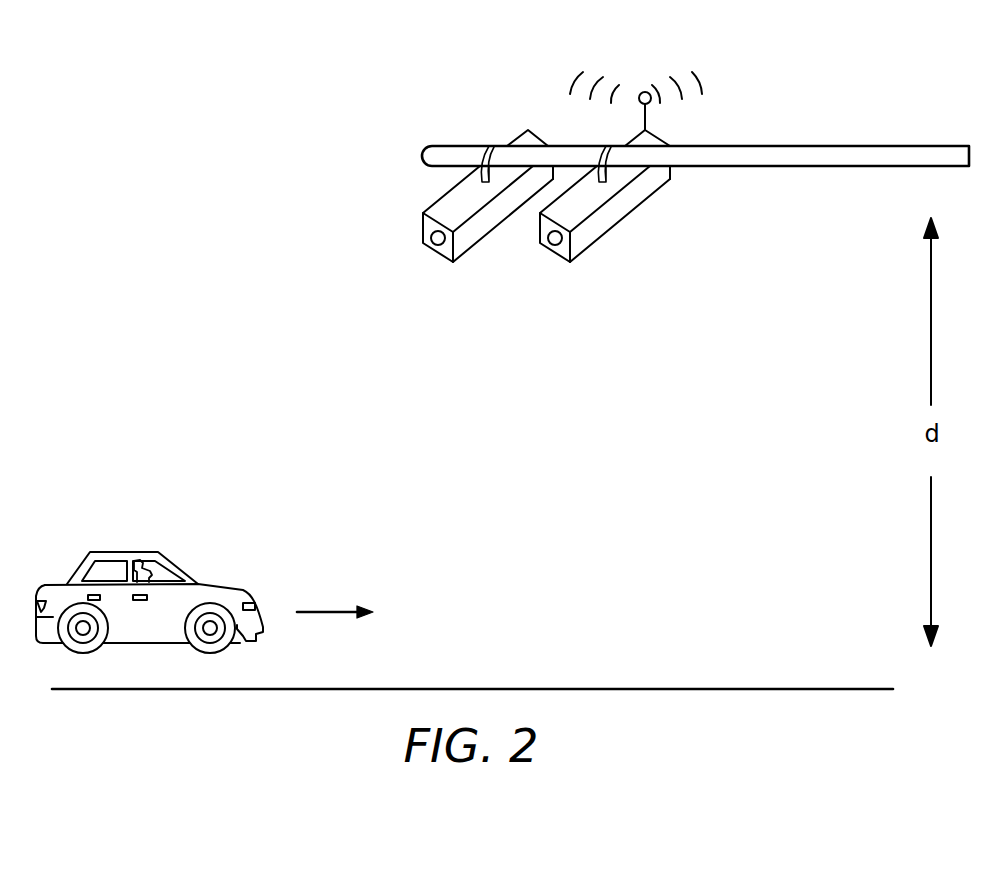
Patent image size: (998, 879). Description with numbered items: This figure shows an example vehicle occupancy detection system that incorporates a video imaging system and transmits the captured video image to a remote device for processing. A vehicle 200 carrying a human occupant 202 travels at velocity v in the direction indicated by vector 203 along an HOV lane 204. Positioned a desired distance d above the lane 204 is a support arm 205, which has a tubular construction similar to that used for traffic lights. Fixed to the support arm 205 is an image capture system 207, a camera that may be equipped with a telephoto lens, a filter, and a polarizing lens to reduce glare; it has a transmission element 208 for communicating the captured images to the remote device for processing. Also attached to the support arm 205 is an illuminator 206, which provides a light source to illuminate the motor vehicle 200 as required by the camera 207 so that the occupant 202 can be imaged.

The vehicle 200 is at (141, 578).
The human occupant 202 is at (143, 560).
The vector 203 is at (338, 612).
The HOV lane 204 is at (630, 688).
The support arm 205 is at (455, 146).
The illuminator 206 is at (508, 218).
The image capture system 207 is at (627, 216).
The transmission element 208 is at (645, 92).